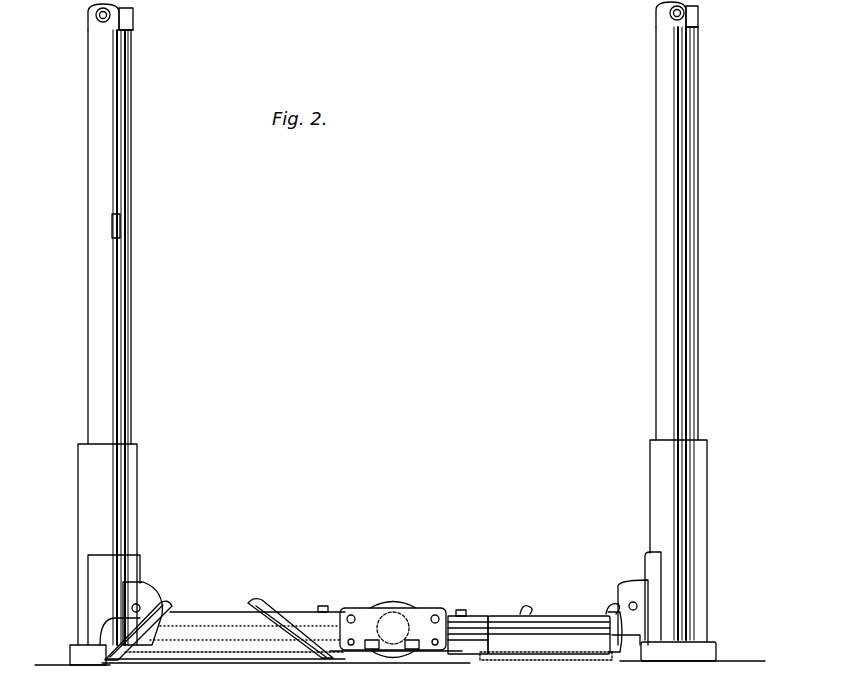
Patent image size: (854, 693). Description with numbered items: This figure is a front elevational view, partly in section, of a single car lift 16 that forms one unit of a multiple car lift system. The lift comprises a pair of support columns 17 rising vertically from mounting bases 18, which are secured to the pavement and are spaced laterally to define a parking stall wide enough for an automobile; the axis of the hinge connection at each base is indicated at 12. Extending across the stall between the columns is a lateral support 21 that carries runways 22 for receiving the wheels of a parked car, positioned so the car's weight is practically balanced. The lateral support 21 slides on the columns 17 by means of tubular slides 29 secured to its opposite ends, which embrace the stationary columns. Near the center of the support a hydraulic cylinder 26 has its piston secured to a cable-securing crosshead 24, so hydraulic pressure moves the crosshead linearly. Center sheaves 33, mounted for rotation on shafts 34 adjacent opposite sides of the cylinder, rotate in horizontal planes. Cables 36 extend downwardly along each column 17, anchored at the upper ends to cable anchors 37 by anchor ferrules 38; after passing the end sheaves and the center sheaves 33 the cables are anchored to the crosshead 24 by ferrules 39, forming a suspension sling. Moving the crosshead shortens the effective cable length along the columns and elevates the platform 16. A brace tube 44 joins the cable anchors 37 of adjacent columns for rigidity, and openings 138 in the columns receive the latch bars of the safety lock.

The pivot axis 12 is at (80, 620).
The car lift 16 is at (205, 665).
The support column 17 is at (113, 333).
The mounting base 18 is at (72, 645).
The lateral support 21 is at (290, 625).
The runway 22 is at (215, 608).
The cable-securing crosshead 24 is at (420, 612).
The hydraulic cylinder 26 is at (393, 600).
The tubular slide 29 is at (122, 470).
The center sheave 33 is at (480, 625).
The shaft 34 is at (322, 606).
The cable 36 is at (121, 143).
The cable anchor 37 is at (131, 25).
The anchor ferrule 38 is at (134, 12).
The ferrule 39 is at (351, 615).
The brace tube 44 is at (97, 20).
The opening 138 is at (118, 226).